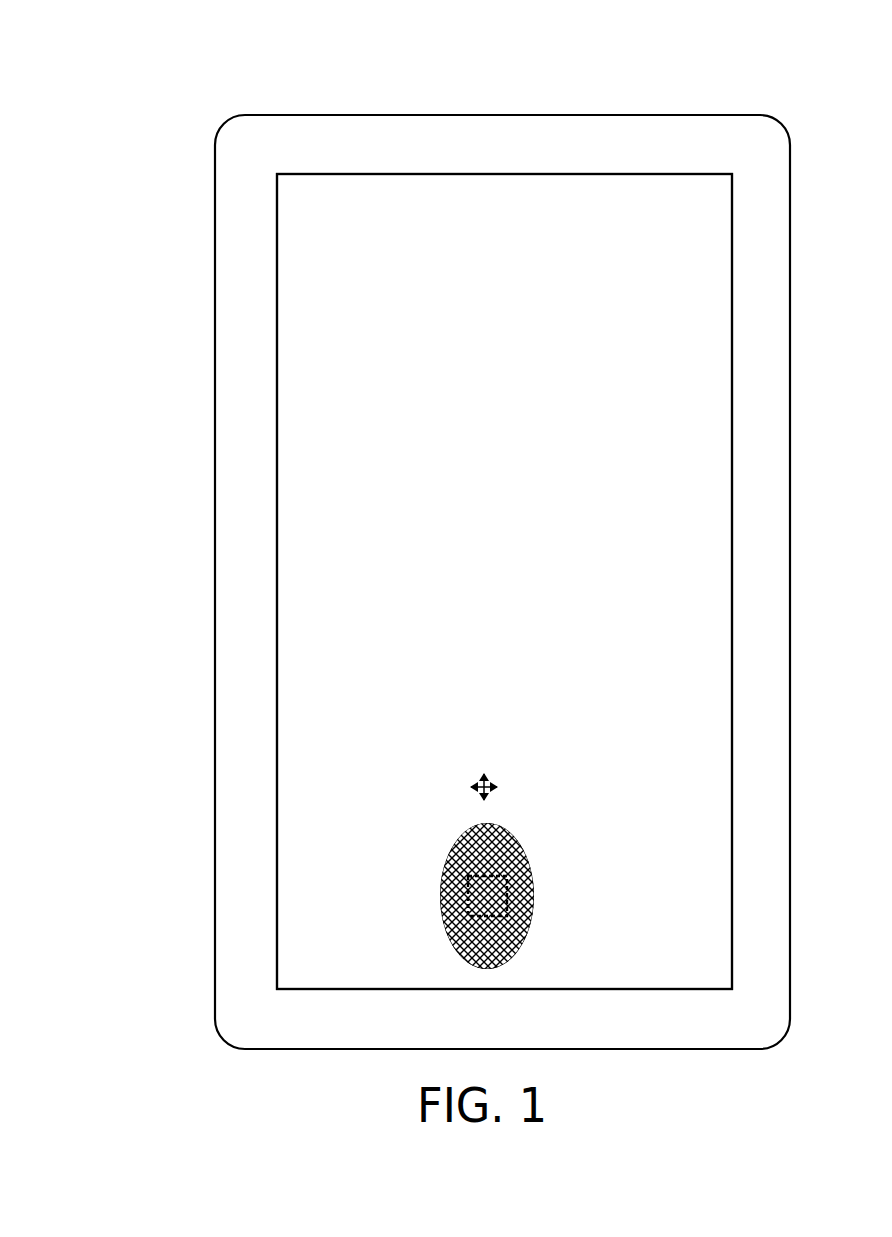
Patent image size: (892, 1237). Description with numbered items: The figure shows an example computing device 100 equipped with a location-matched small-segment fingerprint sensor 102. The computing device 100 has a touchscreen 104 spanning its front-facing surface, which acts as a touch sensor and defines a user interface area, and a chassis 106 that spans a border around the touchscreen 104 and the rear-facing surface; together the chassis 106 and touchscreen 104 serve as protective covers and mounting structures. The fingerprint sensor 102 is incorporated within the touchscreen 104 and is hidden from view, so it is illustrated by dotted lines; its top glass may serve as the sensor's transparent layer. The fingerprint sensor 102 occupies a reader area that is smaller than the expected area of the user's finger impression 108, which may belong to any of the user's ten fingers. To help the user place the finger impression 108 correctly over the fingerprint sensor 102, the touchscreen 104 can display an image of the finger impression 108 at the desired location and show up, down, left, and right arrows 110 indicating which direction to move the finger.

The computing device 100 is at (166, 77).
The fingerprint sensor 102 is at (508, 897).
The touchscreen 104 is at (520, 504).
The chassis 106 is at (652, 160).
The finger impression 108 is at (492, 841).
The arrows 110 is at (464, 766).